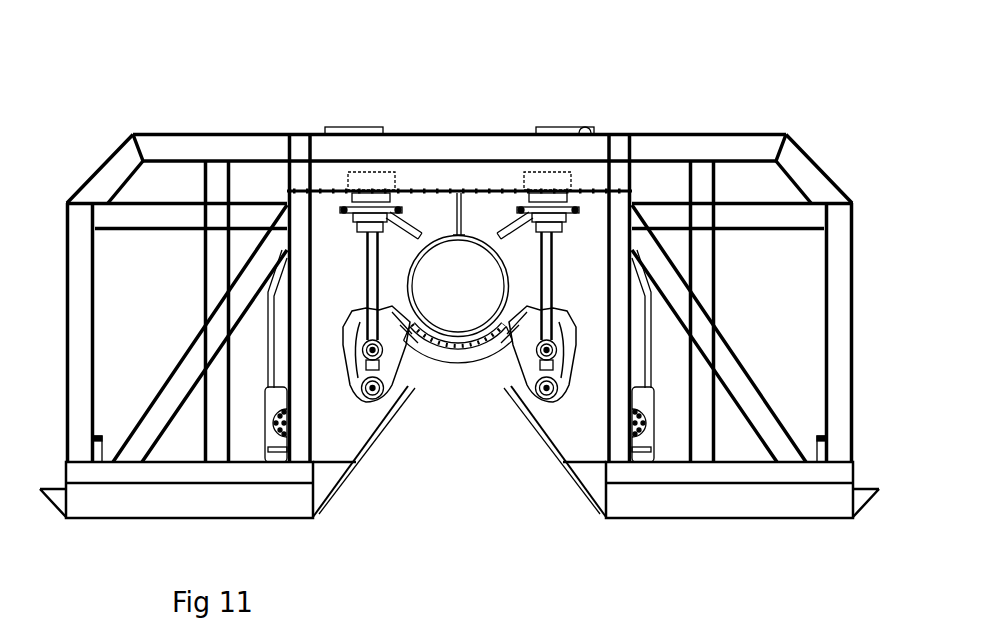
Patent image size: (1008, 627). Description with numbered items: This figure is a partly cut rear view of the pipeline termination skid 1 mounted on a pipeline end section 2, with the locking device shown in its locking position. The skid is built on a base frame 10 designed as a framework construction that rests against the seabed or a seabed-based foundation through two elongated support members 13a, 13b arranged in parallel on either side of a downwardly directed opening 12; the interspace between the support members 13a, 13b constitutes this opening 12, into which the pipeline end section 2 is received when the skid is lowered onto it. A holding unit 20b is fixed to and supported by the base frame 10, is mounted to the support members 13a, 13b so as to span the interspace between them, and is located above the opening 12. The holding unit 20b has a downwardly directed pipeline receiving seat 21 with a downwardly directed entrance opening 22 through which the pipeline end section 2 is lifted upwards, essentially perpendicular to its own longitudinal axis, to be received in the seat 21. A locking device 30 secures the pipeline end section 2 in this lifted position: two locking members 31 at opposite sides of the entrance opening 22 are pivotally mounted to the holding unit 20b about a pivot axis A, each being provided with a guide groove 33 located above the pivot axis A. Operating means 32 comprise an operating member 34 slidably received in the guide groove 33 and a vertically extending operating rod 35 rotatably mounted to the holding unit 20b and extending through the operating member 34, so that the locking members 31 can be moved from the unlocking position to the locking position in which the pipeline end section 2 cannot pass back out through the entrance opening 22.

The pipeline termination skid 1 is at (707, 103).
The pipeline end section 2 is at (412, 285).
The base frame 10 is at (675, 543).
The downwardly directed opening 12 is at (555, 508).
The elongated support member 13a is at (740, 508).
The elongated support member 13b is at (163, 508).
The holding unit 20b is at (463, 178).
The pipeline receiving seat 21 is at (449, 238).
The entrance opening 22 is at (456, 370).
The locking device 30 is at (383, 408).
The locking member 31 is at (353, 368).
The operating means 32 is at (412, 174).
The guide groove 33 is at (394, 312).
The operating member 34 is at (365, 333).
The operating rod 35 is at (367, 266).
The pivot axis A is at (365, 398).